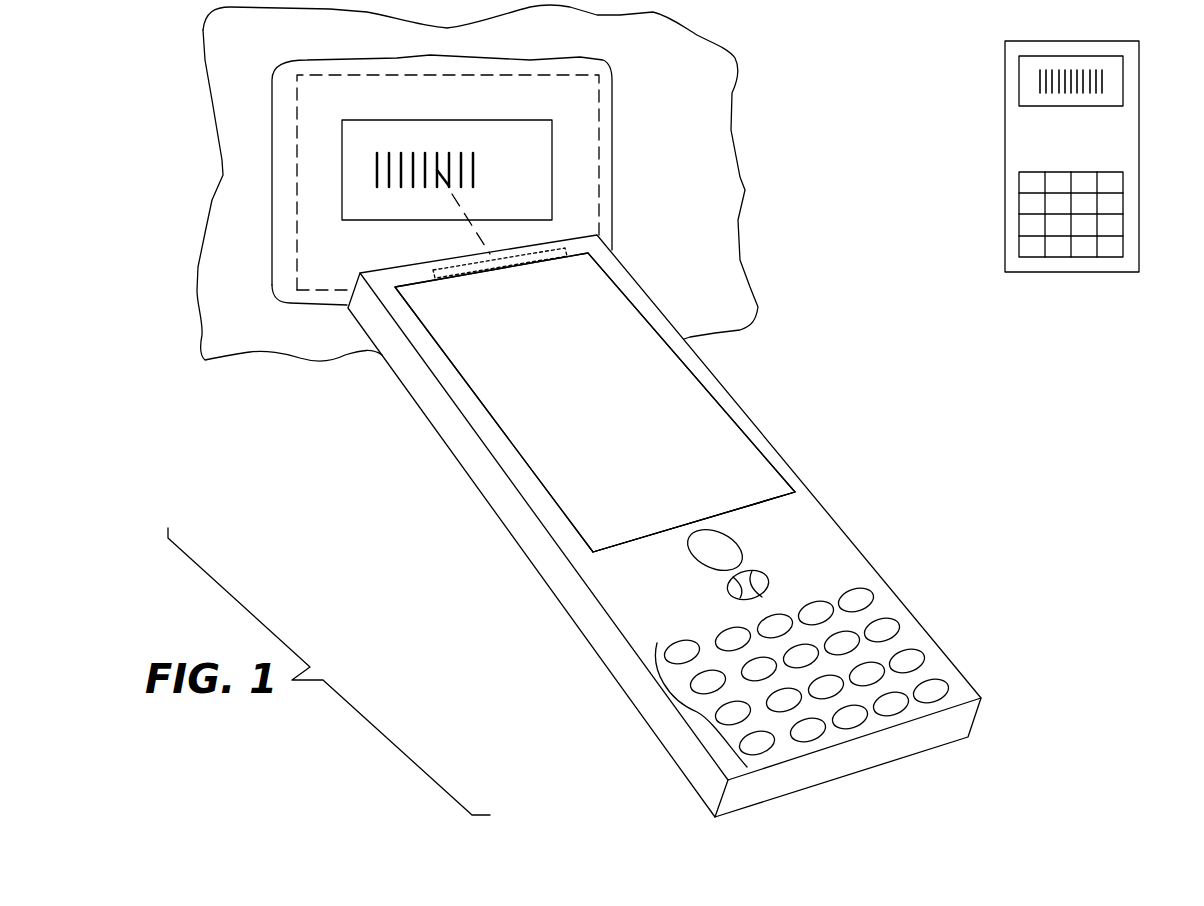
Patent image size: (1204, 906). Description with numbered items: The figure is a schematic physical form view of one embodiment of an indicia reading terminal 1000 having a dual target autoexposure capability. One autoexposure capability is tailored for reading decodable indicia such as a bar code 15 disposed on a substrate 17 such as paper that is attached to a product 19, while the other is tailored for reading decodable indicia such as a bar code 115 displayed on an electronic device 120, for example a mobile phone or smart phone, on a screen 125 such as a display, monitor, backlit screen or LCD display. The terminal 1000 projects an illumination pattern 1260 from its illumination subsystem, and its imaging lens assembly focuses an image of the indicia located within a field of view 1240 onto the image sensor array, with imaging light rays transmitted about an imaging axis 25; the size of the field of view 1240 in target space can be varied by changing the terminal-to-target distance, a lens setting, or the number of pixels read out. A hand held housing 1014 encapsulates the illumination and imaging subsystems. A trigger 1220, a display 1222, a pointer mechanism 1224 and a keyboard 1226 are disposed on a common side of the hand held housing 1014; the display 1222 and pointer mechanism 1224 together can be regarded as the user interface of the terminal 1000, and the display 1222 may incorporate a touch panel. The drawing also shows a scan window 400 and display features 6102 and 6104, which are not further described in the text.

The bar code 15 is at (473, 163).
The substrate 17 is at (347, 153).
The product 19 is at (745, 192).
The imaging axis 25 is at (467, 221).
The bar code 115 is at (1104, 73).
The electronic device 120 is at (960, 78).
The screen 125 is at (1117, 99).
The scan window 400 is at (602, 243).
The indicia reading terminal 1000 is at (779, 294).
The hand held housing 1014 is at (890, 610).
The trigger 1220 is at (740, 545).
The display 1222 is at (793, 488).
The pointer mechanism 1224 is at (767, 575).
The keyboard 1226 is at (697, 712).
The field of view 1240 is at (599, 160).
The illumination pattern 1260 is at (618, 117).
The display 6102 is at (575, 282).
The display screen 6104 is at (600, 323).